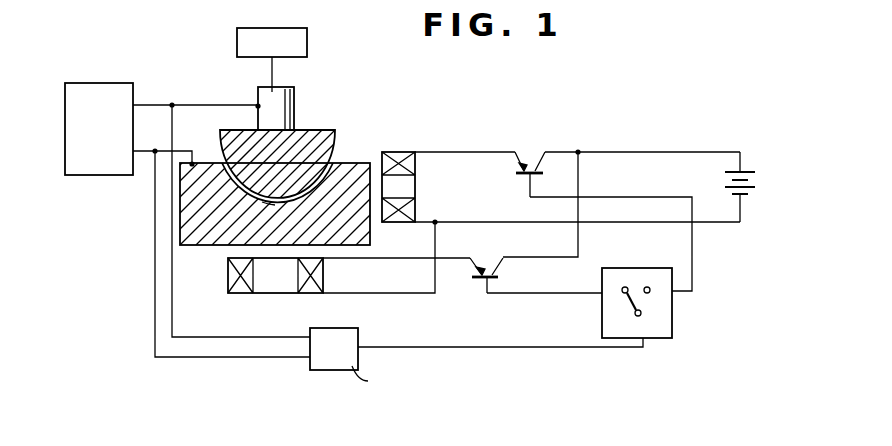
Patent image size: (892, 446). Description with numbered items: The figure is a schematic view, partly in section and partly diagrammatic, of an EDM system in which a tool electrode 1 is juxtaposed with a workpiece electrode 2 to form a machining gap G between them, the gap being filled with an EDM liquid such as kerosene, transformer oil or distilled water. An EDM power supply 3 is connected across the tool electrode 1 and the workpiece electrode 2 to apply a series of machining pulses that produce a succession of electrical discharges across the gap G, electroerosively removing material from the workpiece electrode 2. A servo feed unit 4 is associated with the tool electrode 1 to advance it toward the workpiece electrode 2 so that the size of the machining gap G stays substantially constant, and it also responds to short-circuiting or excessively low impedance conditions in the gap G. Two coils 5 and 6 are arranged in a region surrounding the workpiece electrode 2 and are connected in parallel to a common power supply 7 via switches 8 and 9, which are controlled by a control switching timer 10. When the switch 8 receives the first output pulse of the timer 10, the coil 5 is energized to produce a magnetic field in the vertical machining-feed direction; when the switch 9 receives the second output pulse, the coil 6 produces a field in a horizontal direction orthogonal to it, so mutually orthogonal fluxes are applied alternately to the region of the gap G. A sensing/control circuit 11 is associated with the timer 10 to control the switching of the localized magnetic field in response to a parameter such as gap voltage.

The tool electrode 1 is at (314, 130).
The workpiece electrode 2 is at (186, 246).
The EDM power supply 3 is at (97, 176).
The servo feed unit 4 is at (308, 46).
The coil 5 is at (246, 294).
The coil 6 is at (399, 150).
The common power supply 7 is at (724, 186).
The switch 8 is at (487, 264).
The switch 9 is at (528, 158).
The control switching timer 10 is at (601, 313).
The sensing/control circuit 11 is at (336, 371).
The machining gap G is at (262, 201).